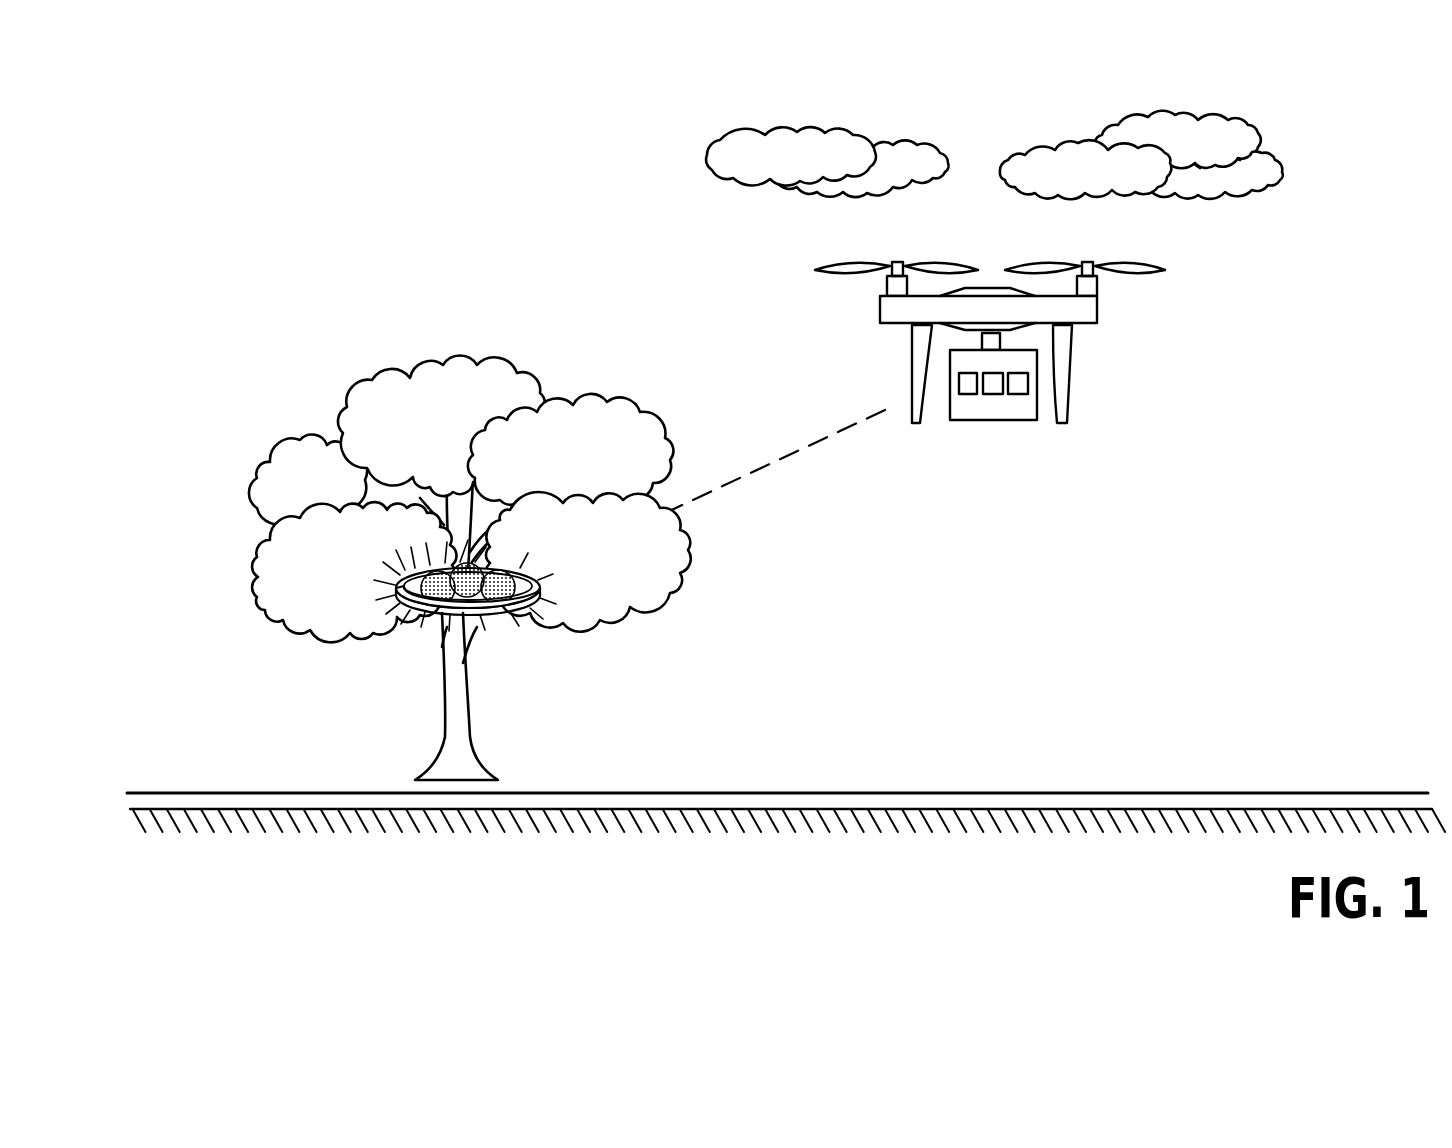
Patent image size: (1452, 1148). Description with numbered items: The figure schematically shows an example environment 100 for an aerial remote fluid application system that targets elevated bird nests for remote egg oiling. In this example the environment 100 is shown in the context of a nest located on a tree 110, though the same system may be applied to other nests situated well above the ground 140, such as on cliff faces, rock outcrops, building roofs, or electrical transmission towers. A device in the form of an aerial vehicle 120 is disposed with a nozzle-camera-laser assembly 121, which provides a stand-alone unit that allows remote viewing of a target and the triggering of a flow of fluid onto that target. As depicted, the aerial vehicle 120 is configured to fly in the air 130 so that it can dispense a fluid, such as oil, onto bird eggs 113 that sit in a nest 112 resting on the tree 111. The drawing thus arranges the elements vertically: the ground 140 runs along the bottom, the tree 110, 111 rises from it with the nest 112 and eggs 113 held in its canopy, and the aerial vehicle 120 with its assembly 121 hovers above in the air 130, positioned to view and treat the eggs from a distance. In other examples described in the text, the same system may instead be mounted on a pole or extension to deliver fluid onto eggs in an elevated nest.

The environment 100 is at (202, 118).
The tree 110 is at (494, 568).
The tree 111 is at (468, 710).
The nest 112 is at (477, 600).
The bird eggs 113 is at (503, 612).
The aerial vehicle 120 is at (1036, 344).
The nozzle-camera-laser assembly 121 is at (987, 420).
The air 130 is at (1258, 108).
The ground 140 is at (672, 780).